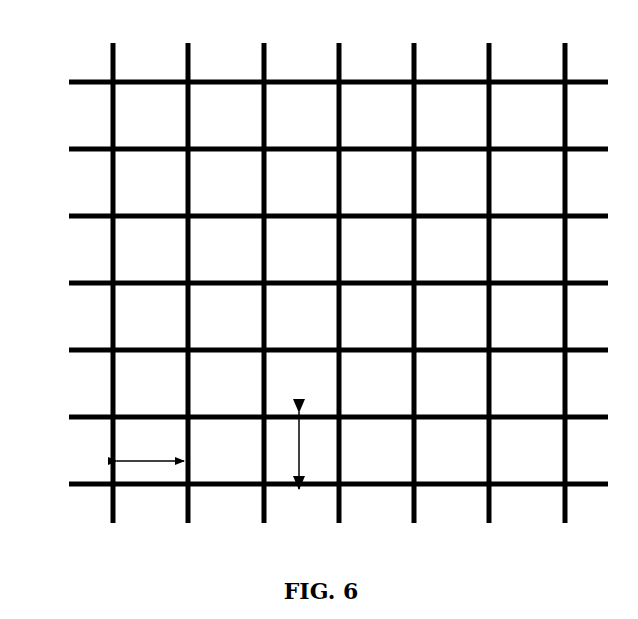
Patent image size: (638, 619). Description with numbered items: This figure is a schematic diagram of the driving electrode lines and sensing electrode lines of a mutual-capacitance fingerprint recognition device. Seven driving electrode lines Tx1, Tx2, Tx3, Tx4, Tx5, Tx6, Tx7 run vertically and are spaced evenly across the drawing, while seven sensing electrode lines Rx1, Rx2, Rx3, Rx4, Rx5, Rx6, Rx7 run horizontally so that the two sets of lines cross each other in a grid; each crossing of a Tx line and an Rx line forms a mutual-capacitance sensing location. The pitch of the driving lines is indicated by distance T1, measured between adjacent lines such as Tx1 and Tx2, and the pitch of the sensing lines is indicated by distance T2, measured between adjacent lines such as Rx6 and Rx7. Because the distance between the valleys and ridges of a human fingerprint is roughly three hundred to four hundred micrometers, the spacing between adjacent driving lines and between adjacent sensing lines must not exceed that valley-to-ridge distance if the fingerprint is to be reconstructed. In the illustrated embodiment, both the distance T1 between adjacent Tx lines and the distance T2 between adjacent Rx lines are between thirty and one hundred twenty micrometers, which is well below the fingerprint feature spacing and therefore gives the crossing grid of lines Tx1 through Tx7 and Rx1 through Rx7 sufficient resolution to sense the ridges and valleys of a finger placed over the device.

The driving electrode line Tx1 is at (114, 268).
The driving electrode line Tx2 is at (189, 268).
The driving electrode line Tx3 is at (264, 268).
The driving electrode line Tx4 is at (339, 268).
The driving electrode line Tx5 is at (414, 268).
The driving electrode line Tx6 is at (489, 268).
The driving electrode line Tx7 is at (565, 268).
The sensing electrode line Rx1 is at (314, 83).
The sensing electrode line Rx2 is at (314, 150).
The sensing electrode line Rx3 is at (314, 217).
The sensing electrode line Rx4 is at (314, 284).
The sensing electrode line Rx5 is at (314, 351).
The sensing electrode line Rx6 is at (314, 418).
The sensing electrode line Rx7 is at (314, 485).
The distance between adjacent Tx lines T1 is at (150, 447).
The distance between adjacent Rx lines T2 is at (298, 450).